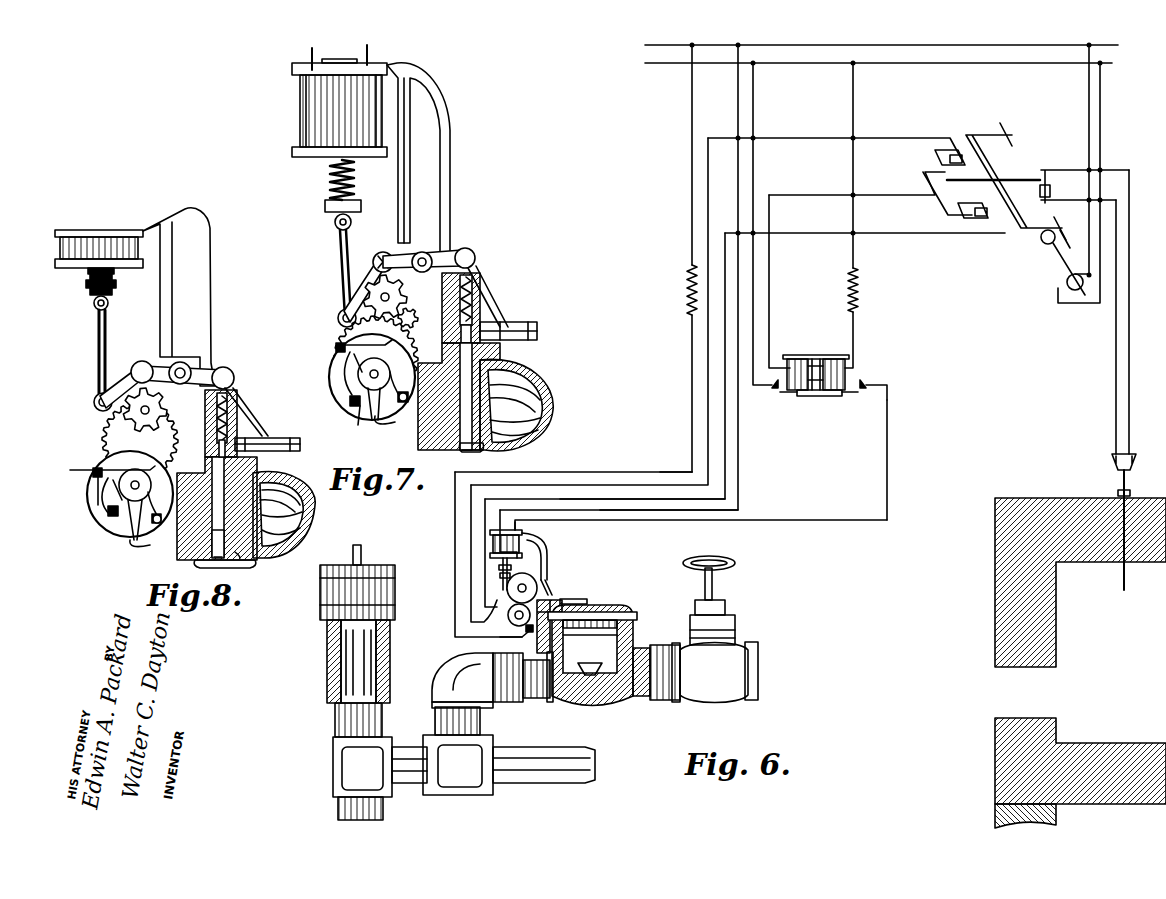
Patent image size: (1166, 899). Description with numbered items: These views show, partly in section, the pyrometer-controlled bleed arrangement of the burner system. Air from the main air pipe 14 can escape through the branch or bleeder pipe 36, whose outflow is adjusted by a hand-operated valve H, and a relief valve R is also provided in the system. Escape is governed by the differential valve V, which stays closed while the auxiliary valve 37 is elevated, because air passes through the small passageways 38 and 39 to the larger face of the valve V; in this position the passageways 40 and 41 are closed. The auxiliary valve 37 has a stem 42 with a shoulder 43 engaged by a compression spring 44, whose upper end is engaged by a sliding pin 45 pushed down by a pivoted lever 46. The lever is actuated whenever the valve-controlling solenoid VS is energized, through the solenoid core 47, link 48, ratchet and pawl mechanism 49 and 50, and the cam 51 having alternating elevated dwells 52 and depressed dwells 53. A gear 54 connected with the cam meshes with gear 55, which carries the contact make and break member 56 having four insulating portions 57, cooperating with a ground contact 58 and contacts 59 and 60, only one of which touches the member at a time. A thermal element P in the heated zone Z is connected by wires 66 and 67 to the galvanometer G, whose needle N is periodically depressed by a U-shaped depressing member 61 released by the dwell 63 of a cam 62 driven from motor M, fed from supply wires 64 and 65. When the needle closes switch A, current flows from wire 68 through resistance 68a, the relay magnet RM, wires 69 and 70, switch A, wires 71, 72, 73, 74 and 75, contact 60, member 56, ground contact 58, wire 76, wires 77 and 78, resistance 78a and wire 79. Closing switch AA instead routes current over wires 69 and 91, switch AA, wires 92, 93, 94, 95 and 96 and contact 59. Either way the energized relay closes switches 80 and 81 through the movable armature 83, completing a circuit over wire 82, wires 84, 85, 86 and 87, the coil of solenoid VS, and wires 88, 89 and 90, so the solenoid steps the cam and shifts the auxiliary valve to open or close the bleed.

In FIG. 8, the valve-controlling solenoid VS is at (121, 228).
In FIG. 7, the valve-controlling solenoid VS is at (297, 97).
In FIG. 6, the valve-controlling solenoid VS is at (524, 537).
In FIG. 8, the pivoted lever 46 is at (184, 366).
In FIG. 7, the pivoted lever 46 is at (440, 250).
In FIG. 6, the pivoted lever 46 is at (545, 575).
In FIG. 8, the shoulder 43 is at (214, 410).
In FIG. 7, the shoulder 43 is at (472, 300).
In FIG. 8, the small passageway 40 is at (255, 437).
In FIG. 7, the small passageway 40 is at (490, 333).
In FIG. 8, the make and break contact 60 is at (102, 466).
In FIG. 7, the make and break contact 60 is at (338, 343).
In FIG. 6, the make and break contact 60 is at (530, 580).
In FIG. 8, the stem 42 is at (222, 437).
In FIG. 7, the stem 42 is at (475, 325).
In FIG. 8, the small passageway 41 is at (300, 447).
In FIG. 7, the small passageway 41 is at (537, 324).
In FIG. 8, the auxiliary valve 37 is at (265, 477).
In FIG. 7, the auxiliary valve 37 is at (505, 385).
In FIG. 8, the make and break contact 59 is at (108, 485).
In FIG. 7, the make and break contact 59 is at (352, 396).
In FIG. 8, the small passageway 39 is at (304, 492).
In FIG. 7, the small passageway 39 is at (545, 400).
In FIG. 6, the small passageway 39 is at (567, 622).
In FIG. 8, the wire 96 is at (114, 545).
In FIG. 7, the wire 96 is at (355, 424).
In FIG. 6, the wire 96 is at (486, 620).
In FIG. 8, the wire 76 is at (155, 520).
In FIG. 7, the wire 76 is at (400, 412).
In FIG. 6, the wire 76 is at (455, 633).
In FIG. 8, the ground contact 58 is at (162, 524).
In FIG. 7, the ground contact 58 is at (408, 404).
In FIG. 6, the ground contact 58 is at (530, 634).
In FIG. 8, the contact make and break member 56 is at (127, 528).
In FIG. 7, the contact make and break member 56 is at (375, 402).
In FIG. 8, the small passageway 38 is at (241, 554).
In FIG. 7, the small passageway 38 is at (482, 448).
In FIG. 6, the small passageway 38 is at (572, 636).
In FIG. 7, the wire 88 is at (310, 58).
In FIG. 6, the wire 88 is at (497, 530).
In FIG. 7, the wire 87 is at (369, 55).
In FIG. 6, the wire 87 is at (544, 537).
In FIG. 7, the solenoid core 47 is at (330, 180).
In FIG. 7, the link 48 is at (338, 238).
In FIG. 7, the cam 51 is at (381, 252).
In FIG. 7, the elevated dwells 52 is at (423, 252).
In FIG. 7, the sliding pin 45 is at (484, 280).
In FIG. 6, the sliding pin 45 is at (553, 585).
In FIG. 7, the compression spring 44 is at (475, 258).
In FIG. 7, the ratchet 49 is at (347, 292).
In FIG. 7, the pawl 50 is at (338, 318).
In FIG. 7, the depressed dwells 53 is at (407, 296).
In FIG. 7, the gear 54 is at (422, 319).
In FIG. 7, the gear 55 is at (386, 358).
In FIG. 7, the wire 75 is at (333, 375).
In FIG. 6, the wire 75 is at (505, 598).
In FIG. 7, the insulating portions 57 is at (358, 410).
In FIG. 6, the supply wire 65 is at (1108, 46).
In FIG. 6, the supply wire 64 is at (1106, 67).
In FIG. 6, the wire 82 is at (753, 106).
In FIG. 6, the wire 92 is at (870, 138).
In FIG. 6, the wire 68 is at (853, 167).
In FIG. 6, the wire 79 is at (692, 203).
In FIG. 6, the switch AA is at (936, 158).
In FIG. 6, the U-shaped depressing member 61 is at (988, 166).
In FIG. 6, the wire 91 is at (928, 178).
In FIG. 6, the needle N is at (958, 180).
In FIG. 6, the needle galvanometer G is at (1084, 187).
In FIG. 6, the wire 70 is at (948, 215).
In FIG. 6, the switch A is at (973, 217).
In FIG. 6, the wire 71 is at (898, 233).
In FIG. 6, the cam 62 is at (1043, 244).
In FIG. 6, the dwell 63 is at (1060, 243).
In FIG. 6, the motor M is at (1075, 174).
In FIG. 6, the resistance 78a is at (688, 292).
In FIG. 6, the wire 69 is at (769, 281).
In FIG. 6, the resistance 68a is at (871, 290).
In FIG. 6, the wire 67 is at (1130, 382).
In FIG. 6, the wire 66 is at (1116, 403).
In FIG. 6, the wire 93 is at (708, 355).
In FIG. 6, the relay magnet RM is at (850, 362).
In FIG. 6, the wire 84 is at (887, 381).
In FIG. 6, the switch 80 is at (768, 392).
In FIG. 6, the movable armature 83 is at (819, 406).
In FIG. 6, the switch 81 is at (868, 392).
In FIG. 6, the wire 94 is at (598, 472).
In FIG. 6, the wire 78 is at (650, 472).
In FIG. 6, the wire 90 is at (738, 442).
In FIG. 6, the wire 72 is at (725, 464).
In FIG. 6, the wire 85 is at (887, 480).
In FIG. 6, the wire 77 is at (455, 513).
In FIG. 6, the wire 95 is at (471, 536).
In FIG. 6, the wire 74 is at (500, 554).
In FIG. 6, the wire 73 is at (628, 500).
In FIG. 6, the wire 89 is at (667, 511).
In FIG. 6, the wire 86 is at (806, 520).
In FIG. 6, the relief valve R is at (390, 608).
In FIG. 6, the differential valve V is at (637, 637).
In FIG. 6, the hand-operated valve H is at (745, 650).
In FIG. 6, the branch or bleeder pipe 36 is at (657, 700).
In FIG. 6, the main air pipe 14 is at (558, 750).
In FIG. 6, the thermal element P is at (1130, 523).
In FIG. 6, the zone Z is at (1080, 663).